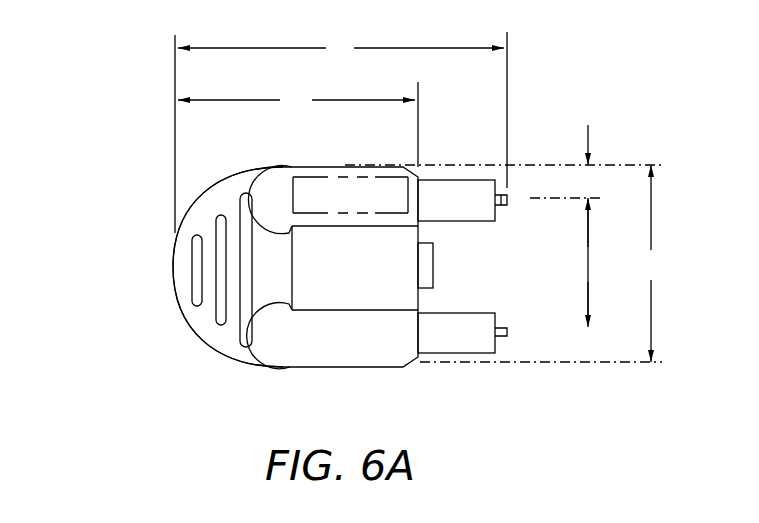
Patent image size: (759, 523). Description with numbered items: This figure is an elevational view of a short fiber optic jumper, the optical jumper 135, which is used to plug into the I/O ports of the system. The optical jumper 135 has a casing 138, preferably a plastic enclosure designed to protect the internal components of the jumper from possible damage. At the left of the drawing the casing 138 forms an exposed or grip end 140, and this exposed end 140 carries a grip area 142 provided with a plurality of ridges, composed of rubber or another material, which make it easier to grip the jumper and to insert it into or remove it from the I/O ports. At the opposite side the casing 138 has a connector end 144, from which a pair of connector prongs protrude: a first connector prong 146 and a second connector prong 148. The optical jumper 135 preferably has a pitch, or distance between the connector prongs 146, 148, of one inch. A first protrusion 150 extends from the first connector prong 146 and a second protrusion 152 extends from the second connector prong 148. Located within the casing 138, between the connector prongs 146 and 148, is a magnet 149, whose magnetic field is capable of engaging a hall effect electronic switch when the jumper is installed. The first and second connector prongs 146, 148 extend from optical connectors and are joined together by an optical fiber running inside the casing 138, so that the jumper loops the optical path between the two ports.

The optical jumper 135 is at (385, 221).
The casing 138 is at (332, 358).
The exposed or grip end 140 is at (137, 248).
The grip area 142 is at (207, 307).
The connector end 144 is at (560, 243).
The first connector prong 146 is at (447, 193).
The second connector prong 148 is at (448, 343).
The magnet 149 is at (428, 268).
The first protrusion 150 is at (506, 197).
The second protrusion 152 is at (511, 336).